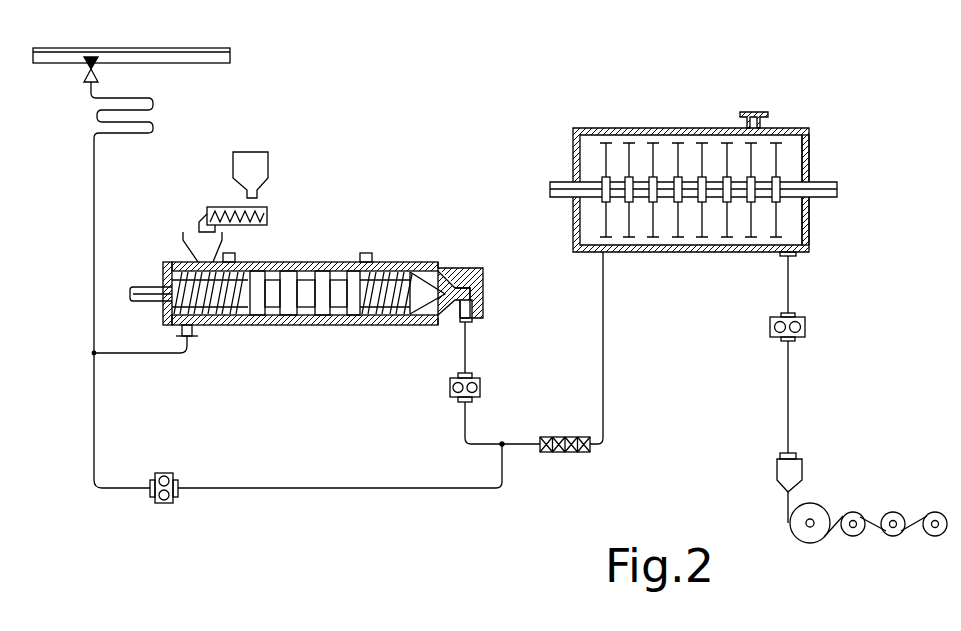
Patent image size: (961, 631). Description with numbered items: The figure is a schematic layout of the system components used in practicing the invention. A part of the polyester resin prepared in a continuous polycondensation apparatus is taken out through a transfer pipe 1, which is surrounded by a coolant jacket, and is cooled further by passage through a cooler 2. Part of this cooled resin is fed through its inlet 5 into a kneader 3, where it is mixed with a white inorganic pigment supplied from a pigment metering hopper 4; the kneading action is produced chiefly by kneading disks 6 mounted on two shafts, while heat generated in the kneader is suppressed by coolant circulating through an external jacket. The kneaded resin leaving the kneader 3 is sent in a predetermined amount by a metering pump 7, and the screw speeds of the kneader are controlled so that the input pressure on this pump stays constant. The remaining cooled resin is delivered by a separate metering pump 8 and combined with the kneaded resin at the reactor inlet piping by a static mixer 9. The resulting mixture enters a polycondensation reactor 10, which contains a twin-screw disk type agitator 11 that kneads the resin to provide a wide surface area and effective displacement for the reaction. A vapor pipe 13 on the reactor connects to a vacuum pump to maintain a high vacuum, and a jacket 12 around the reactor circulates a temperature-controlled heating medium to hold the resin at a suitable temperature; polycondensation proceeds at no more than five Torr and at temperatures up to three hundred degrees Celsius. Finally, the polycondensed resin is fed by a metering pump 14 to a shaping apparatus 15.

The transfer pipe 1 is at (175, 46).
The cooler 2 is at (160, 124).
The kneader 3 is at (336, 260).
The pigment metering hopper 4 is at (268, 163).
The inlet 5 is at (189, 349).
The kneading disks 6 is at (275, 312).
The metering pump 7 is at (482, 388).
The metering pump 8 is at (171, 472).
The static mixer 9 is at (565, 453).
The polycondensation reactor 10 is at (677, 128).
The twin-screw disk type agitator 11 is at (695, 222).
The jacket 12 is at (806, 152).
The vapor pipe 13 is at (765, 114).
The metering pump 14 is at (805, 326).
The shaping apparatus 15 is at (802, 470).